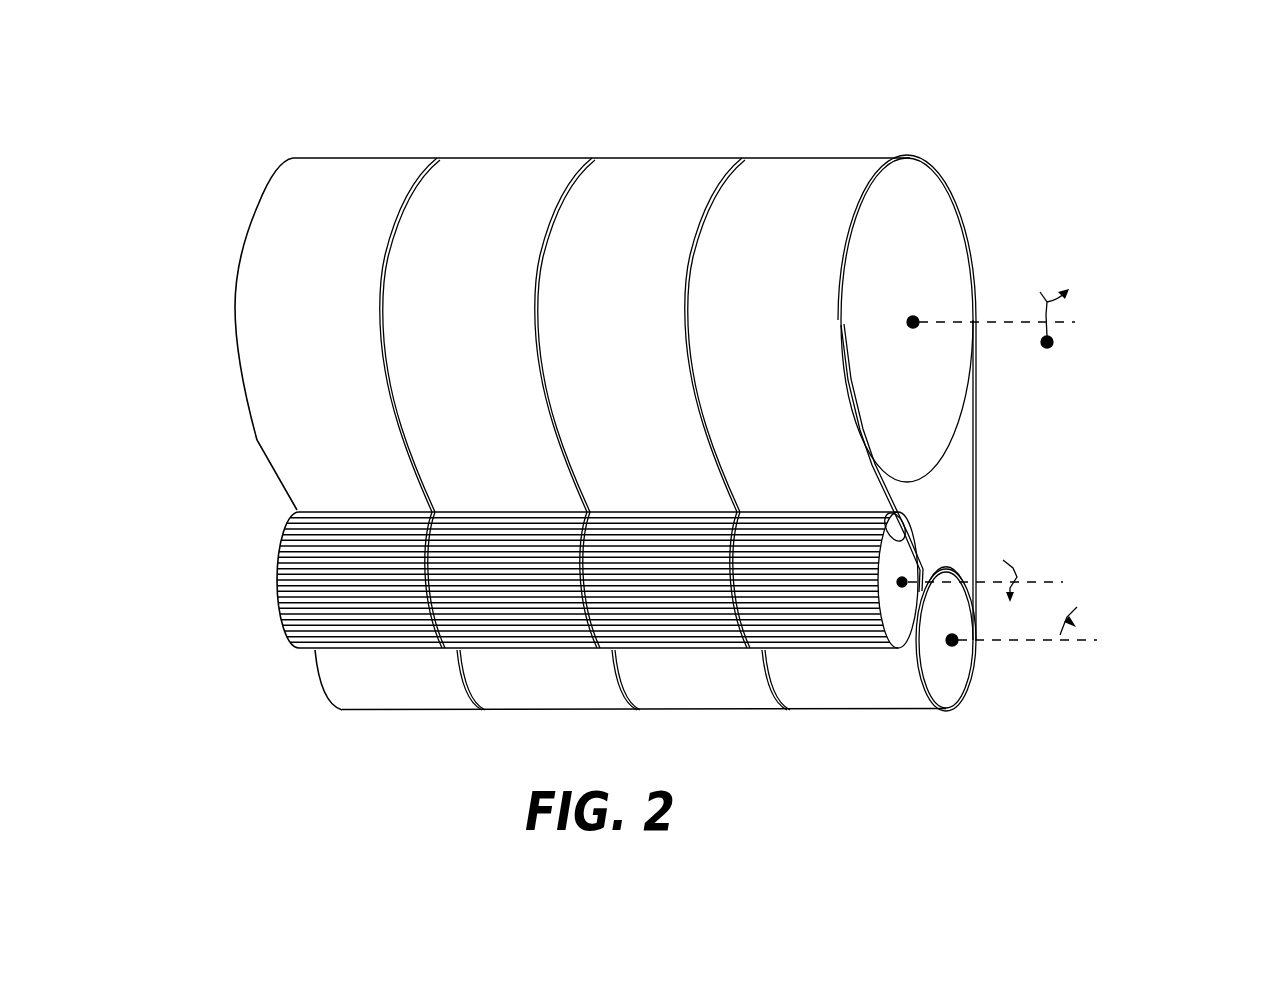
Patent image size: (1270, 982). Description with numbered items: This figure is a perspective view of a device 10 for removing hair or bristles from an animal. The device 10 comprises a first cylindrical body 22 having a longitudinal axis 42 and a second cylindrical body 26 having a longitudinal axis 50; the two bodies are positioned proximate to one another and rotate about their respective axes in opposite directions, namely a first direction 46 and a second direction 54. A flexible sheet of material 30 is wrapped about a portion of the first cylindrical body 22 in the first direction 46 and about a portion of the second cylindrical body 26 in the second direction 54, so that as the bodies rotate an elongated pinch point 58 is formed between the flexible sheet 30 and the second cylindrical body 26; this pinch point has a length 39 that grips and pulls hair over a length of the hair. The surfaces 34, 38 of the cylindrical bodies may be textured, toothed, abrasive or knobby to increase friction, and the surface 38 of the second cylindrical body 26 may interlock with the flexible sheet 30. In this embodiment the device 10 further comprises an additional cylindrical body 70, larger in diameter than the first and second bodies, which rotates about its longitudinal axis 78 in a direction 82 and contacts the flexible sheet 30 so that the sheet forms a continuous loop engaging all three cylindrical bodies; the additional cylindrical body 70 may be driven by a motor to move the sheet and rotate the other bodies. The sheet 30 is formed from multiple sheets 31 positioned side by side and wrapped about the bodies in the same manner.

The device 10 is at (1197, 350).
The first cylindrical body 22 is at (953, 687).
The second cylindrical body 26 is at (897, 632).
The flexible sheet of material 30 is at (977, 498).
The multiple sheets 31 is at (790, 168).
The surface of first cylindrical body 34 is at (957, 573).
The surface of second cylindrical body 38 is at (818, 625).
The length of elongated pinch point 39 is at (900, 528).
The longitudinal axis of first cylindrical body 42 is at (1053, 640).
The first direction 46 is at (1077, 607).
The longitudinal axis of second cylindrical body 50 is at (1047, 583).
The second direction 54 is at (1003, 560).
The elongated pinch point 58 is at (685, 659).
The additional cylindrical body 70 is at (928, 198).
The longitudinal axis of additional cylindrical body 78 is at (1062, 323).
The direction of rotation of additional cylindrical body 82 is at (1040, 292).